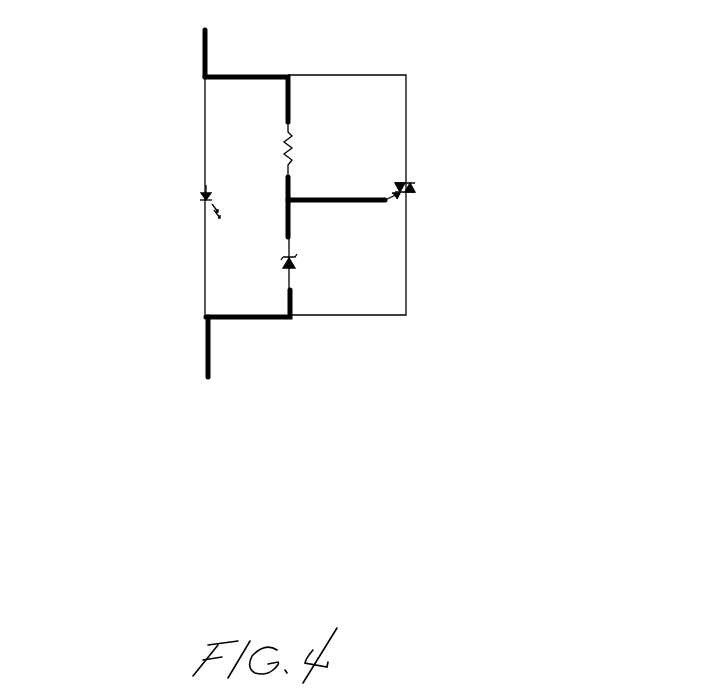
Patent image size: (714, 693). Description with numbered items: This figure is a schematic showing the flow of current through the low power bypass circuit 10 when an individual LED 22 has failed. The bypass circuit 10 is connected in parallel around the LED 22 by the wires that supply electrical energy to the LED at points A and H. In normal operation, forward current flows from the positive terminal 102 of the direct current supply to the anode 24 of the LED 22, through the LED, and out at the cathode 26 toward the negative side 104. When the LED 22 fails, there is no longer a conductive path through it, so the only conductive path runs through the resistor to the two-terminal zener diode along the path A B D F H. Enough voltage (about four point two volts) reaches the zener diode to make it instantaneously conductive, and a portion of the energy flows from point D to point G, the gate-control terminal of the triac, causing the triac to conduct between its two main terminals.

The low power bypass circuit 10 is at (458, 60).
The positive terminal 102 is at (176, 52).
The negative side 104 is at (174, 359).
The LED 22 is at (203, 195).
The anode 24 is at (208, 190).
The cathode 26 is at (203, 207).